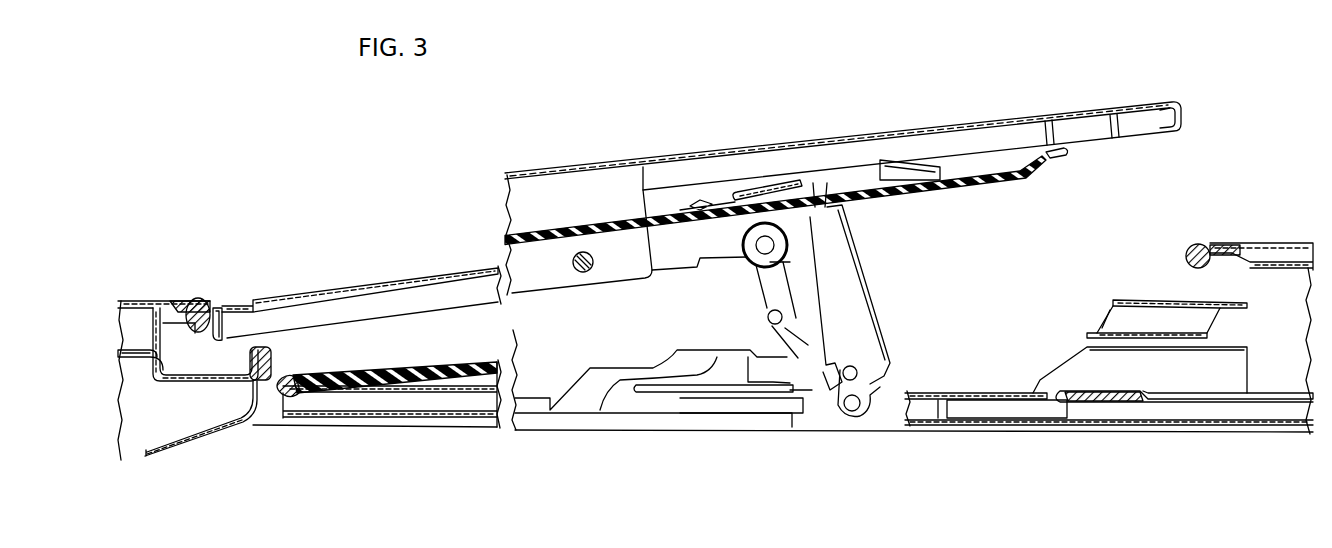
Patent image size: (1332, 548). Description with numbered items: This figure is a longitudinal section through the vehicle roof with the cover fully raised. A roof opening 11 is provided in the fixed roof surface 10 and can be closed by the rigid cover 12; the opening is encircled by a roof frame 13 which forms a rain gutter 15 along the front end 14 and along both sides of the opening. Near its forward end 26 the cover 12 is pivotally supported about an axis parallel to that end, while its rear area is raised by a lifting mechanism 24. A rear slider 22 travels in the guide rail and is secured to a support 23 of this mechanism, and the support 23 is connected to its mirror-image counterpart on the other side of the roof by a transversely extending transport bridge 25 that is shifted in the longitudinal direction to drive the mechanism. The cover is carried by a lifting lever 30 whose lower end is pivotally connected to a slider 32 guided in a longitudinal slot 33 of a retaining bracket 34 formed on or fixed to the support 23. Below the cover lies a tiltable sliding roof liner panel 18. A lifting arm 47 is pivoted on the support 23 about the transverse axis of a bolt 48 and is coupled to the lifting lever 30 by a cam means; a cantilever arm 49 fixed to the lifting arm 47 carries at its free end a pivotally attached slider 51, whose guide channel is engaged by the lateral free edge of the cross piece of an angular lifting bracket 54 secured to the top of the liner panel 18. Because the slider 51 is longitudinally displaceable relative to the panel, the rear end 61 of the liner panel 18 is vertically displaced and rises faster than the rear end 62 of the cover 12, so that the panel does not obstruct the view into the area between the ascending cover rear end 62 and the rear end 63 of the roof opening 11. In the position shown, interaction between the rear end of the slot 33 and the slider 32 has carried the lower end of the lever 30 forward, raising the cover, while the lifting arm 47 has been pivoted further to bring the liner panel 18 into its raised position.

The fixed roof surface 10 is at (1292, 243).
The roof opening 11 is at (1172, 191).
The cover 12 is at (685, 150).
The roof frame 13 is at (135, 363).
The front end 14 is at (192, 300).
The rain gutter 15 is at (197, 384).
The tiltable slidable roof liner panel 18 is at (580, 222).
The rear slider 22 is at (1000, 410).
The support 23 is at (1170, 375).
The lifting mechanism 24 is at (878, 268).
The transport bridge 25 is at (1147, 310).
The forward end 26 is at (218, 305).
The lifting lever 30 is at (800, 340).
The slider 32 is at (805, 395).
The longitudinal slot 33 is at (665, 392).
The retaining bracket 34 is at (585, 398).
The lifting arm 47 is at (870, 385).
The bolt 48 is at (852, 411).
The cantilever arm 49 is at (828, 215).
The slider 51 is at (770, 185).
The angular lifting bracket 54 is at (925, 168).
The rear end 61 is at (1057, 150).
The rear end 62 is at (1172, 101).
The rear end 63 is at (1208, 247).